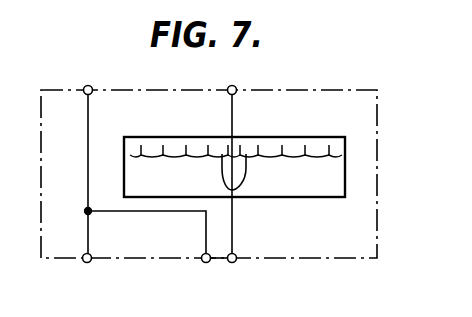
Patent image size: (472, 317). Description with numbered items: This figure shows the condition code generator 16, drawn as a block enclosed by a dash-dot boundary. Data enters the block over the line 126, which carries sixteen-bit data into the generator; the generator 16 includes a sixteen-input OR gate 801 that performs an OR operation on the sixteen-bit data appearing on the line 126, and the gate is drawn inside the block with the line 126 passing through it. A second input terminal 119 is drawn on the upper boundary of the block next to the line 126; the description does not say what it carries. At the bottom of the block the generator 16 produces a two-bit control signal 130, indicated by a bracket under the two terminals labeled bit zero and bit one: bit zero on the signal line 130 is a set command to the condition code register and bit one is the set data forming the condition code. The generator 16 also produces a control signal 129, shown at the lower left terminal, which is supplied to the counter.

The condition code generator 16 is at (379, 172).
The input terminal node 119 is at (88, 84).
The line 126 is at (236, 84).
The control signal 129 is at (84, 263).
The 16-input OR gate 801 is at (352, 153).
The 2-bit control signal 130 is at (241, 263).